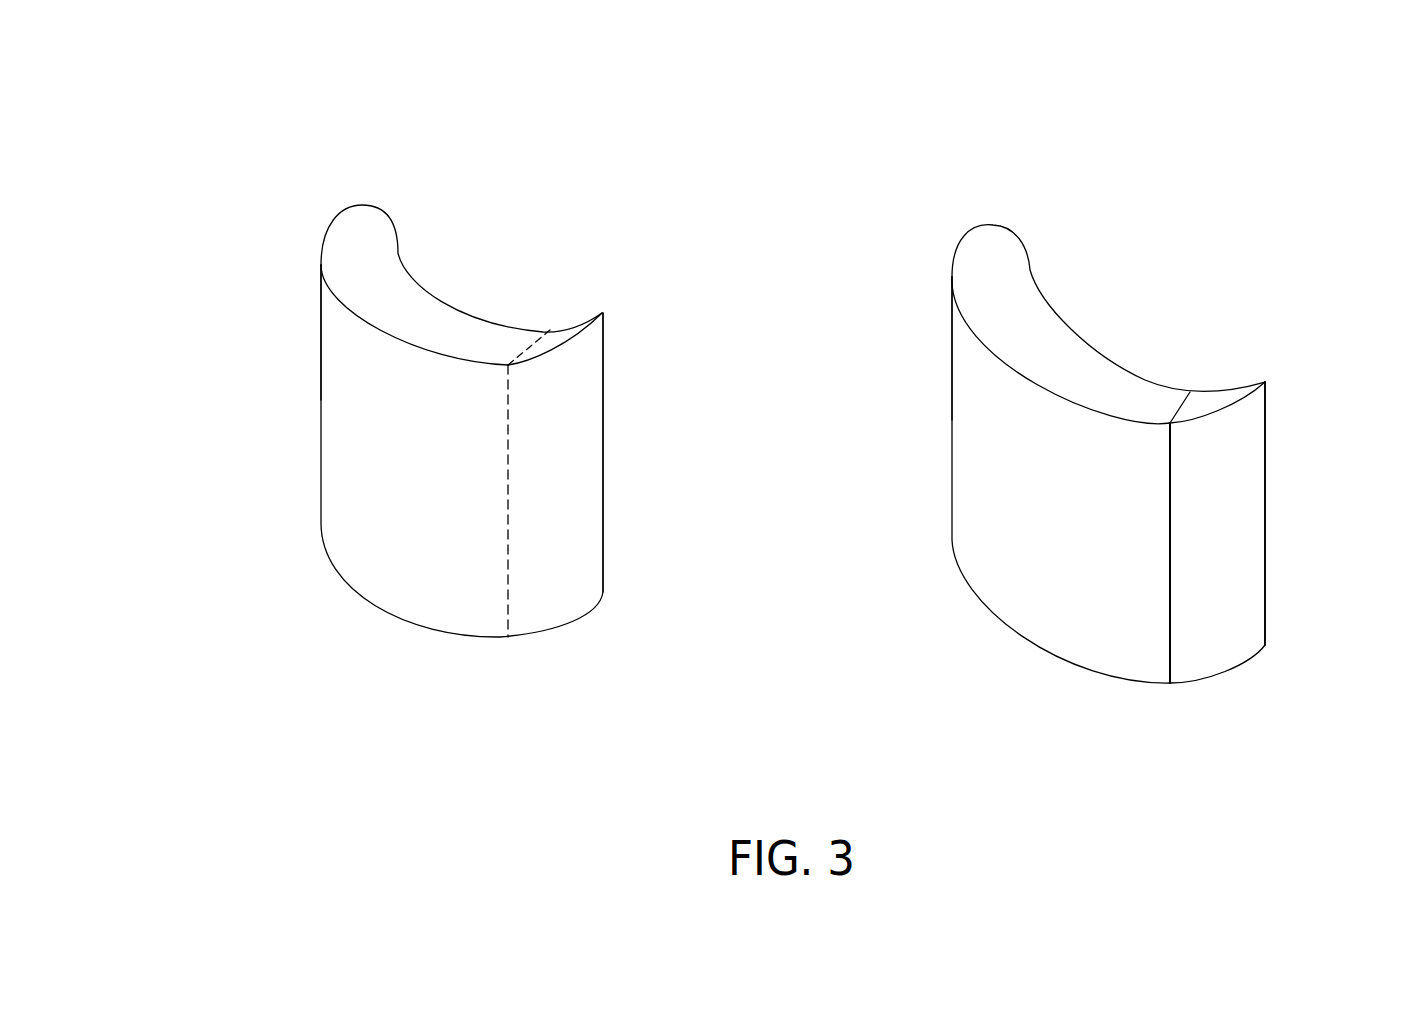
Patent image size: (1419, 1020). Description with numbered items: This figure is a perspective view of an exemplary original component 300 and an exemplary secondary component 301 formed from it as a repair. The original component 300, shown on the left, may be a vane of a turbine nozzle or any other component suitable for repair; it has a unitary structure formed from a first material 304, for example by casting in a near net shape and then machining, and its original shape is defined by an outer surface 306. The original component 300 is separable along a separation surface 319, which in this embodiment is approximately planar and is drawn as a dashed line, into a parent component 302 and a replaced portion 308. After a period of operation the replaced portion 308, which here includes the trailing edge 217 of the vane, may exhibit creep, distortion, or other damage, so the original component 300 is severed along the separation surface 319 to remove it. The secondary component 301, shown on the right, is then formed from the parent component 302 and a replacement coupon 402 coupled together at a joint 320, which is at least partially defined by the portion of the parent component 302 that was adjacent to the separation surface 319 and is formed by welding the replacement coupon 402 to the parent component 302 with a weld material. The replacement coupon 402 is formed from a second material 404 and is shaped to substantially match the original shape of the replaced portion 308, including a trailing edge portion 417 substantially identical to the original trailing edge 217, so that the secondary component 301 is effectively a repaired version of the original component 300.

The original component 300 is at (741, 389).
The secondary component 301 is at (1192, 413).
The parent component 302 is at (403, 260).
The first material 304 is at (348, 477).
The outer surface 306 is at (348, 362).
The replaced portion 308 is at (557, 340).
The separation surface 319 is at (496, 595).
The trailing edge 217 is at (603, 562).
The replacement coupon 402 is at (1227, 383).
The second material 404 is at (1247, 433).
The joint 320 is at (1155, 610).
The trailing edge portion 417 is at (1265, 595).